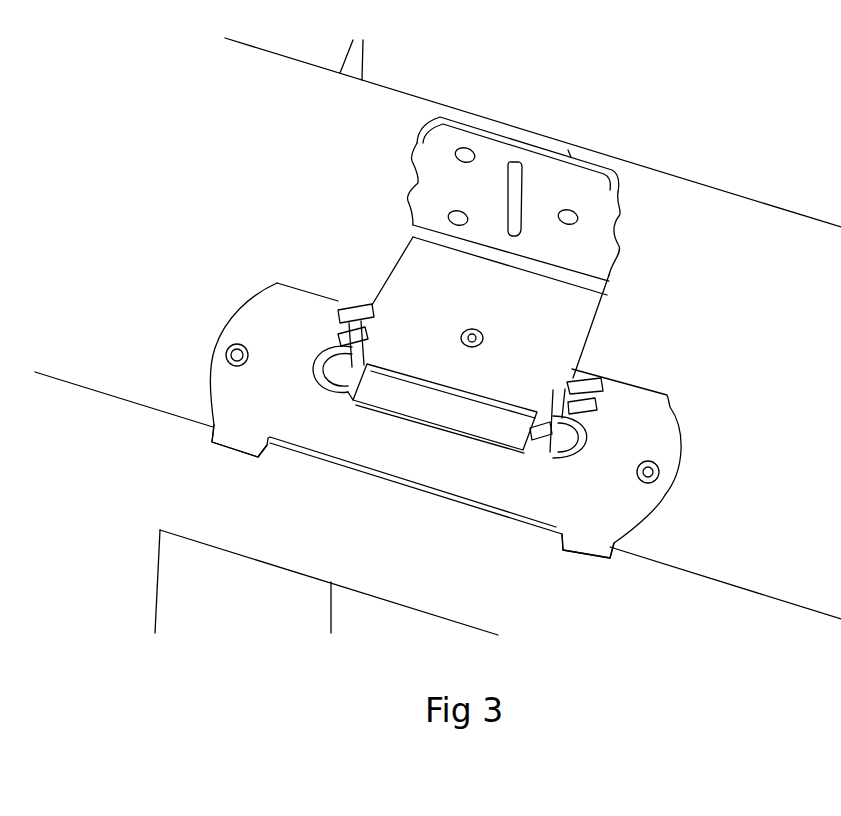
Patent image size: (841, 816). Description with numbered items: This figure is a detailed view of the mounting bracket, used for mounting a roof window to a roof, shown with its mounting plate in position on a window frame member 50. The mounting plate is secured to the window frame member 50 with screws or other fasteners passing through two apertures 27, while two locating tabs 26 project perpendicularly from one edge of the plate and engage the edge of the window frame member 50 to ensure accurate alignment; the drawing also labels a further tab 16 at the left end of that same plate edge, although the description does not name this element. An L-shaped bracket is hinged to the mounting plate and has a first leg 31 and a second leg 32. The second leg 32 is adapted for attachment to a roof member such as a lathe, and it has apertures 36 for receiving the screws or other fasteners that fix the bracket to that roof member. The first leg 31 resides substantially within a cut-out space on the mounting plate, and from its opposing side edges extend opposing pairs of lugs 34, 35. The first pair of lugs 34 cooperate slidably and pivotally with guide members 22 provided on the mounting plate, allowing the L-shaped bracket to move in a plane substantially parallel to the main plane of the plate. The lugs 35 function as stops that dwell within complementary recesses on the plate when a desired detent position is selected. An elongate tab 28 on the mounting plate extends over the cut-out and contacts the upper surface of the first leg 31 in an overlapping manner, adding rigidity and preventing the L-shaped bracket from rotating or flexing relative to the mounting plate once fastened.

The window frame member 50 is at (137, 239).
The left tab 16 is at (235, 443).
The locating tabs 26 is at (595, 552).
The apertures 27 is at (237, 350).
The second leg 32 is at (597, 215).
The apertures 36 is at (455, 152).
The first leg 31 is at (570, 330).
The first pair of lugs 34 is at (350, 357).
The elongate tab 28 is at (463, 413).
The guide members 22 is at (570, 428).
The lugs 35 is at (583, 383).